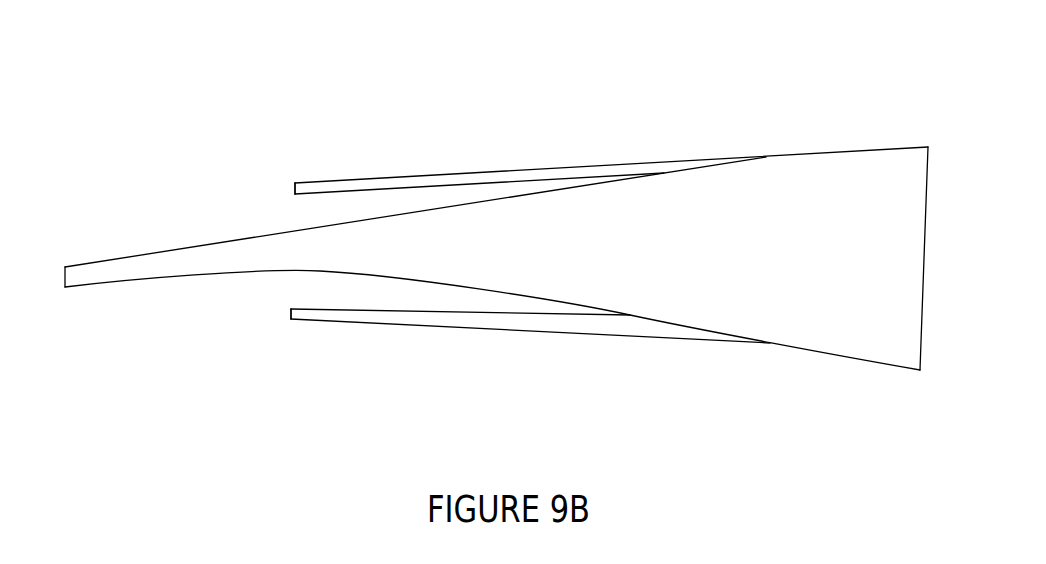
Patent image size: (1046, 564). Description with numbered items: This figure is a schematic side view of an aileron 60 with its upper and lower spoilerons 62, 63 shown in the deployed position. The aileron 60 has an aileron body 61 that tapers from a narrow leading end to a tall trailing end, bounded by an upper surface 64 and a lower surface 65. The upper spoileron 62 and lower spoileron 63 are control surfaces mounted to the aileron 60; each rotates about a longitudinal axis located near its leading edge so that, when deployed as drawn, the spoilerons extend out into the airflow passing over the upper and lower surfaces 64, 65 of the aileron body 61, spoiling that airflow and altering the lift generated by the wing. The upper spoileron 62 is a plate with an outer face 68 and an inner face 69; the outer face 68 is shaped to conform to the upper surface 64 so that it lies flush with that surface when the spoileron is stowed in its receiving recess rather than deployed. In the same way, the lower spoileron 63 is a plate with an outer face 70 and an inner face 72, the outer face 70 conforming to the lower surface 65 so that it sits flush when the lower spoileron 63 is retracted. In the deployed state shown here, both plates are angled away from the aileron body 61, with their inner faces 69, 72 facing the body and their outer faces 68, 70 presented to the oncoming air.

The aileron 60 is at (212, 97).
The aileron body 61 is at (823, 192).
The upper spoileron 62 is at (395, 188).
The lower spoileron 63 is at (455, 320).
The upper surface 64 is at (158, 248).
The lower surface 65 is at (213, 272).
The outer face 68 is at (477, 168).
The inner face 69 is at (323, 195).
The outer face 70 is at (375, 323).
The inner face 72 is at (323, 308).